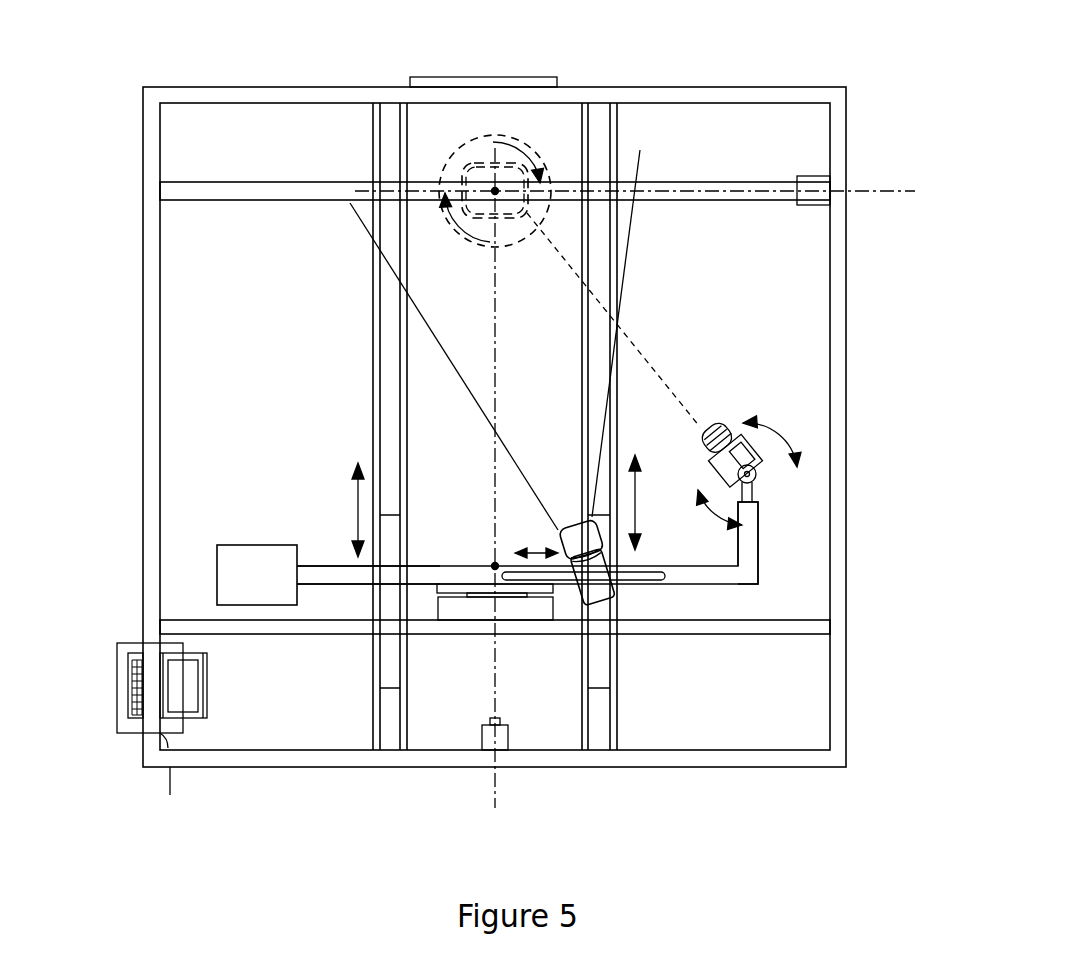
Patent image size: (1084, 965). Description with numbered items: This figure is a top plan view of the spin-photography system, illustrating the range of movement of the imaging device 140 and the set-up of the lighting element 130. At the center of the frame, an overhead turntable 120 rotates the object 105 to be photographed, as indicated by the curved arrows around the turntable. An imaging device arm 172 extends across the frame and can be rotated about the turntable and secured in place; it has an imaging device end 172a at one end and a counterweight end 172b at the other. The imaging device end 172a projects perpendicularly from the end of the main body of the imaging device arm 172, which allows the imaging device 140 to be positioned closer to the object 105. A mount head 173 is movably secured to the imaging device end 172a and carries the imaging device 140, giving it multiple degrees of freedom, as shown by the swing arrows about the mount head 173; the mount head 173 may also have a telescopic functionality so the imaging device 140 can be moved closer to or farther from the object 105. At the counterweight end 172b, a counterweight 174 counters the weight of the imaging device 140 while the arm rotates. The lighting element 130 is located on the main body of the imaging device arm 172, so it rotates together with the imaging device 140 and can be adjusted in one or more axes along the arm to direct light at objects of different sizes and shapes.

The object 105 is at (537, 215).
The overhead turntable 120 is at (508, 188).
The lighting element 130 is at (602, 587).
The imaging device 140 is at (722, 428).
The imaging device arm 172 is at (632, 592).
The imaging device end 172a is at (753, 537).
The counterweight end 172b is at (337, 577).
The mount head 173 is at (755, 488).
The counterweight 174 is at (245, 560).